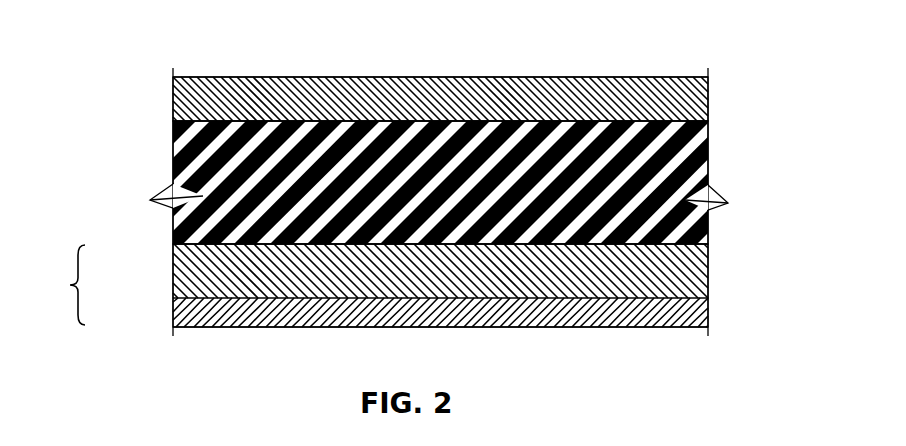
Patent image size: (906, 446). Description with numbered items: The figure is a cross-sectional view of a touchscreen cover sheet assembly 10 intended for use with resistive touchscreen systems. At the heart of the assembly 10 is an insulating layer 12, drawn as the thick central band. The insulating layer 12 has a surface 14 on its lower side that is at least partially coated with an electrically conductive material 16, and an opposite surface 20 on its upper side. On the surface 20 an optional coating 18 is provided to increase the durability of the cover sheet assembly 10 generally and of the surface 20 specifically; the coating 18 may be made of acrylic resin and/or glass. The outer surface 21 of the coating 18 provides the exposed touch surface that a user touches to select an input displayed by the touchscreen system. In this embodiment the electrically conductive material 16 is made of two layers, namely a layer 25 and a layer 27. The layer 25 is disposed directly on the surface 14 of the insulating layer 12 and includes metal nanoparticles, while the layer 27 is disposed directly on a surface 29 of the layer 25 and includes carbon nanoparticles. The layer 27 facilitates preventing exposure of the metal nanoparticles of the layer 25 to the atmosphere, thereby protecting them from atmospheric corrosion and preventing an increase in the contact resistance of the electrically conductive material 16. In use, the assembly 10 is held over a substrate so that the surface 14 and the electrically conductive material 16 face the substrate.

The touchscreen cover sheet assembly 10 is at (140, 42).
The insulating layer 12 is at (200, 168).
The surface 14 is at (443, 247).
The electrically conductive material 16 is at (61, 285).
The coating 18 is at (695, 108).
The surface 20 is at (414, 118).
The surface 21 is at (239, 77).
The layer 25 is at (176, 262).
The layer 27 is at (176, 305).
The surface 29 is at (311, 302).